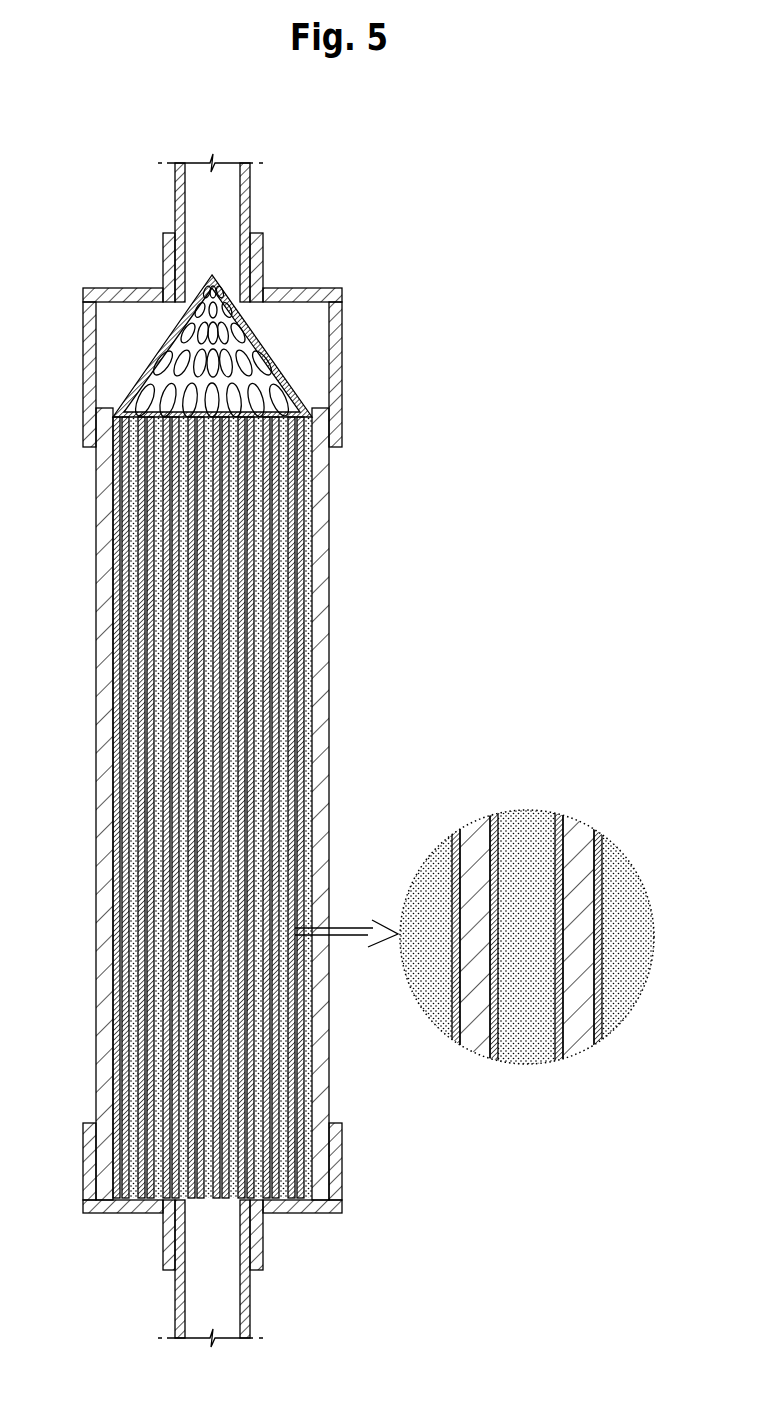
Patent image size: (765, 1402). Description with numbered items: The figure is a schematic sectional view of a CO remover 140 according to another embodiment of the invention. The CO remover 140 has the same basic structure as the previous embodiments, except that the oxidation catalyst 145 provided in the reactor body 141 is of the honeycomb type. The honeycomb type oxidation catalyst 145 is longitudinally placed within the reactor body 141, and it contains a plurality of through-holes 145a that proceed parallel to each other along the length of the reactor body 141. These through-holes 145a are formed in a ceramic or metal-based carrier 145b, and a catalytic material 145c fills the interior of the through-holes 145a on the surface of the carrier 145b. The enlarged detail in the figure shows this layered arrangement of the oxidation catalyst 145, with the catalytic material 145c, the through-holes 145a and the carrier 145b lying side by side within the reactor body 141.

The CO remover 140 is at (231, 123).
The reactor body 141 is at (329, 547).
The oxidation catalyst 145 is at (312, 487).
The through-holes 145a is at (285, 612).
The carrier 145b is at (295, 647).
The catalytic material 145c is at (307, 581).